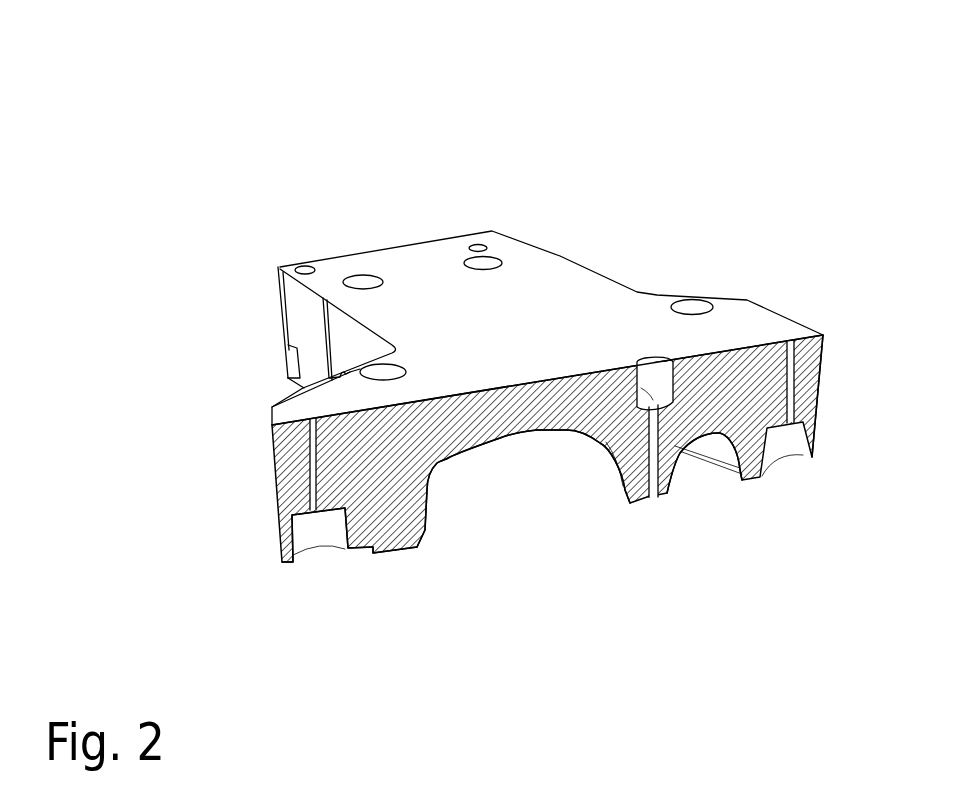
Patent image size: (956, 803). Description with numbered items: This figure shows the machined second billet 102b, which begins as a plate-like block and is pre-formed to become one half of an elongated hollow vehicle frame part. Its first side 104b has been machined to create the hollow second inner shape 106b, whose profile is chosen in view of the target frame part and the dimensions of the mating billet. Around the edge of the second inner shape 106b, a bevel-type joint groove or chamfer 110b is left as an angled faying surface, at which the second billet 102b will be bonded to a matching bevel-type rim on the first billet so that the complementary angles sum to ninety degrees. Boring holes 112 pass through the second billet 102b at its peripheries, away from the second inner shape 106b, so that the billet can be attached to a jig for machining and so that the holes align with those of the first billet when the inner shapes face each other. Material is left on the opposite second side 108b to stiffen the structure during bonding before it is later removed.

The second billet 102b is at (358, 250).
The second side 108b is at (542, 292).
The boring holes 112 is at (693, 303).
The first side 104b is at (385, 555).
The second inner shape 106b is at (553, 427).
The bevel-type joint groove or chamfer 110b is at (725, 468).